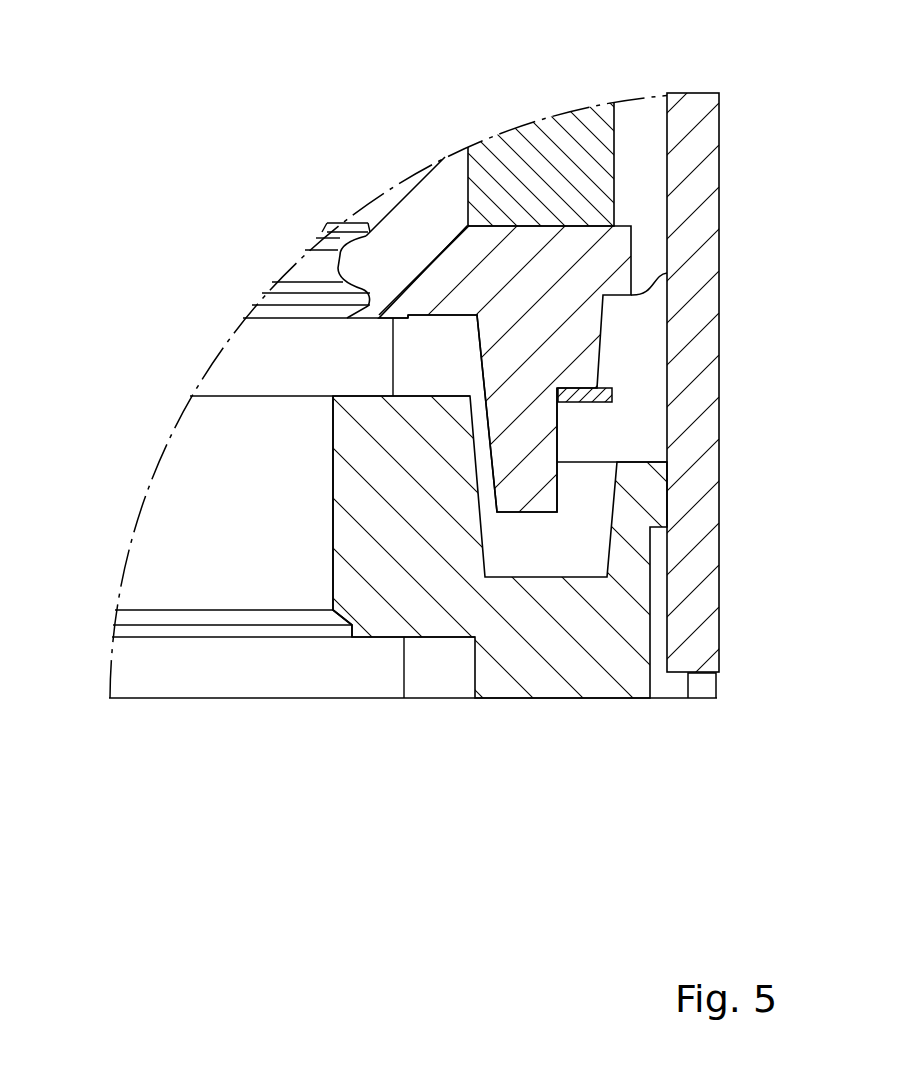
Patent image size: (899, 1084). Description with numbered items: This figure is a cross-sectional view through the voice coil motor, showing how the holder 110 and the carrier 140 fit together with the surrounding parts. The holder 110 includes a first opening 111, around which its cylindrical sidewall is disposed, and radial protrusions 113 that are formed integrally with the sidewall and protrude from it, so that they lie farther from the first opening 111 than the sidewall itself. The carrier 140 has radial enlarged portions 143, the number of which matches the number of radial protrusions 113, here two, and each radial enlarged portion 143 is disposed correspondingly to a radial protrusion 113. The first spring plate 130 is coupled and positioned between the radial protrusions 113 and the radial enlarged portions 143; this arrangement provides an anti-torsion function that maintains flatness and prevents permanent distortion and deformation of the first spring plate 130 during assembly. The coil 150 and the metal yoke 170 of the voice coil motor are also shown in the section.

The holder 110 is at (563, 663).
The first opening 111 is at (193, 530).
The radial protrusion 113 is at (400, 492).
The first spring plate 130 is at (612, 397).
The carrier 140 is at (402, 215).
The radial enlarged portion 143 is at (523, 493).
The coil 150 is at (530, 160).
The metal yoke 170 is at (697, 210).